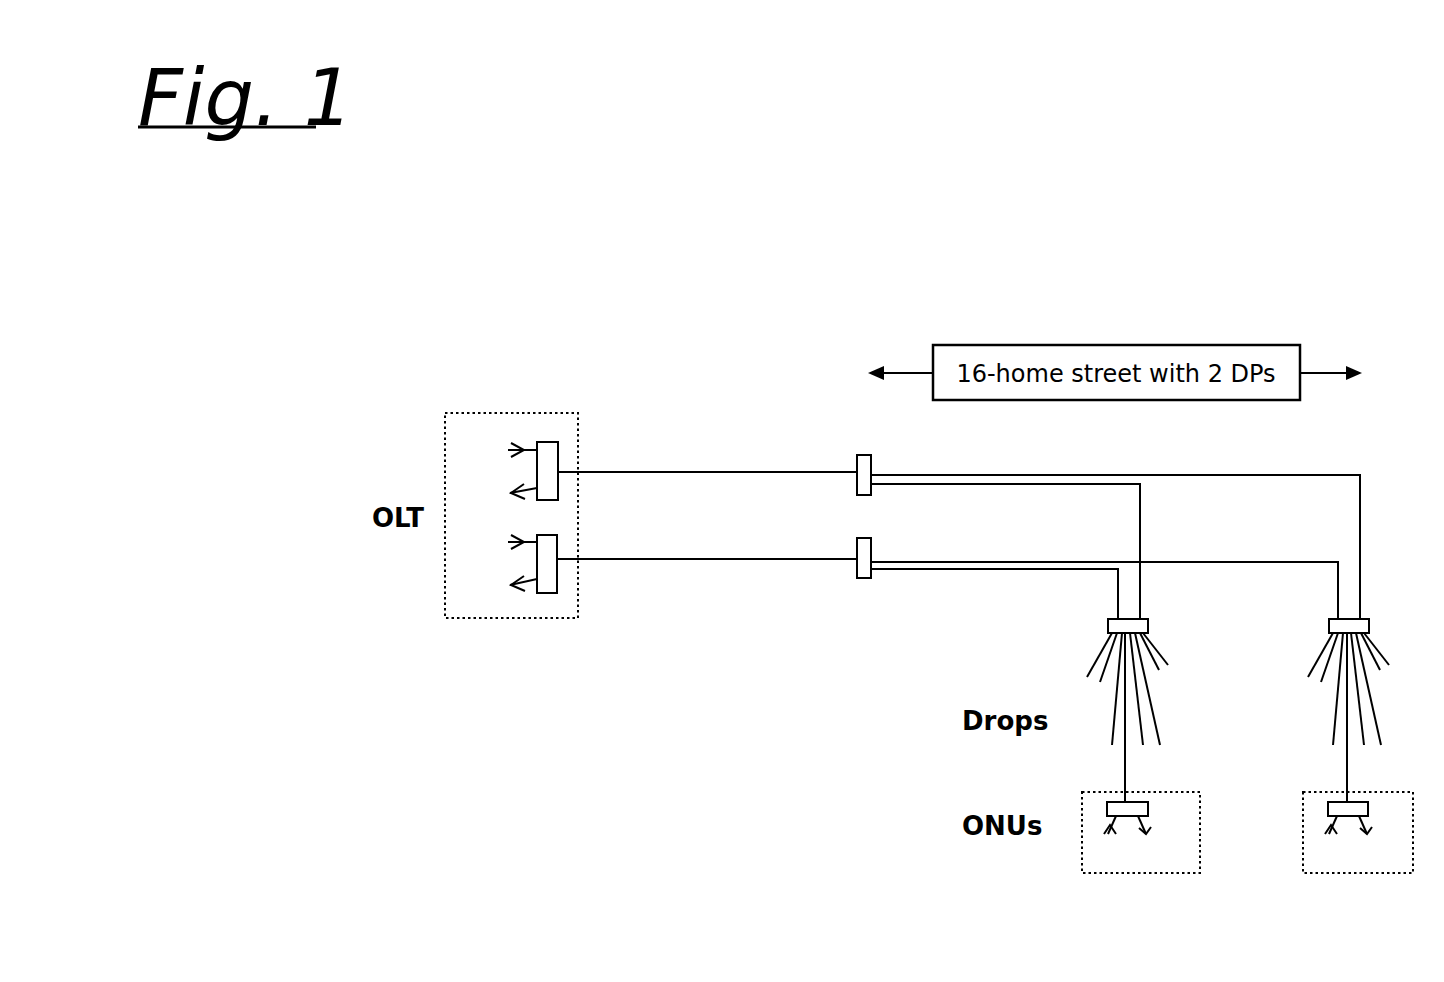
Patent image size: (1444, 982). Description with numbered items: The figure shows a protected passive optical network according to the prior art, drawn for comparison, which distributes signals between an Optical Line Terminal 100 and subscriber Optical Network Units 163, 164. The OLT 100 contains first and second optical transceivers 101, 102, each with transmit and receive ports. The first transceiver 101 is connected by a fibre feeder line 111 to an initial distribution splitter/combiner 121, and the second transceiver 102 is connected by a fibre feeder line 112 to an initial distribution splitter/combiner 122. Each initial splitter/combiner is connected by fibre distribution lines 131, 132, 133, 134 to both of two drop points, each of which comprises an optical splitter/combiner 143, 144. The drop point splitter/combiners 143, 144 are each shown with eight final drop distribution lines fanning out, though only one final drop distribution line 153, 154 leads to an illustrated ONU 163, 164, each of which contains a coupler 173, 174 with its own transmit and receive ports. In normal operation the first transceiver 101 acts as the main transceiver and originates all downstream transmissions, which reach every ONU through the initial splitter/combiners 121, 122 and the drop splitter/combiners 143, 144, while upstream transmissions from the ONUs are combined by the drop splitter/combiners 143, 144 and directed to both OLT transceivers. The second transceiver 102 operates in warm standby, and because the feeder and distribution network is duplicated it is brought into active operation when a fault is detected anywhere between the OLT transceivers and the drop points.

The Optical Line Terminal (OLT) 100 is at (511, 500).
The first optical transceiver 101 is at (539, 459).
The second optical transceiver 102 is at (538, 577).
The fibre feeder line 111 is at (707, 461).
The fibre feeder line 112 is at (707, 548).
The initial distribution splitter/combiner 121 is at (861, 461).
The initial distribution splitter/combiner 122 is at (861, 577).
The fibre distribution line 131 is at (1115, 537).
The fibre distribution line 132 is at (1005, 551).
The fibre distribution line 133 is at (1104, 578).
The fibre distribution line 134 is at (994, 594).
The drop point optical splitter/combiner 143 is at (1148, 680).
The drop point optical splitter/combiner 144 is at (1367, 681).
The final drop distribution line 153 is at (1156, 717).
The final drop distribution line 154 is at (1372, 717).
The Optical Network Unit (ONU) 163 is at (1141, 850).
The Optical Network Unit (ONU) 164 is at (1358, 850).
The ONU transceiver coupler 173 is at (1148, 816).
The ONU transceiver coupler 174 is at (1369, 816).